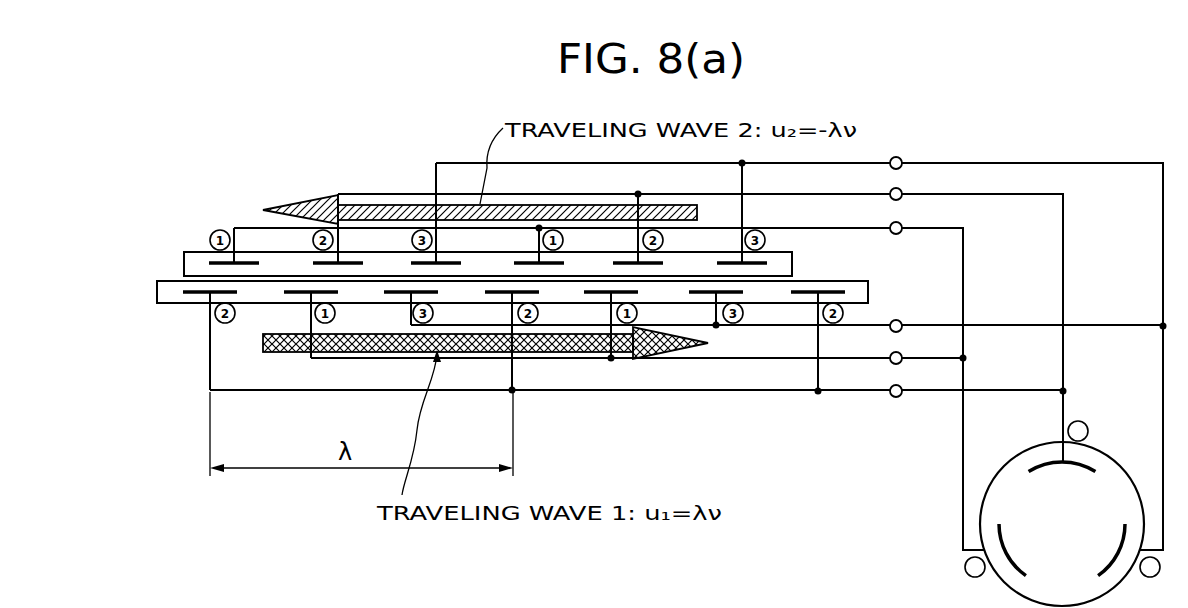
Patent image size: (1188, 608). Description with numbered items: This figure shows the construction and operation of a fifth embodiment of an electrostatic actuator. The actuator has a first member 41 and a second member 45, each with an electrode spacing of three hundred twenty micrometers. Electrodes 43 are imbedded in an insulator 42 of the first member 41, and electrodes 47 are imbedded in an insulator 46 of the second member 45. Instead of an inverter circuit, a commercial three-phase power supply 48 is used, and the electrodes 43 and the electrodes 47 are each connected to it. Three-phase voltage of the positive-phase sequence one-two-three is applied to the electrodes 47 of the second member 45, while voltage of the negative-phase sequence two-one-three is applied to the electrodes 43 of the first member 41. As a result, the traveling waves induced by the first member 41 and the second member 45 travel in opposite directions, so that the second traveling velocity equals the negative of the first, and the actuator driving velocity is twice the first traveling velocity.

The first member 41 is at (158, 310).
The insulator 42 is at (157, 283).
The electrodes 43 is at (198, 296).
The second member 45 is at (178, 263).
The insulator 46 is at (192, 258).
The electrodes 47 is at (203, 260).
The commercial three-phase power supply 48 is at (952, 506).